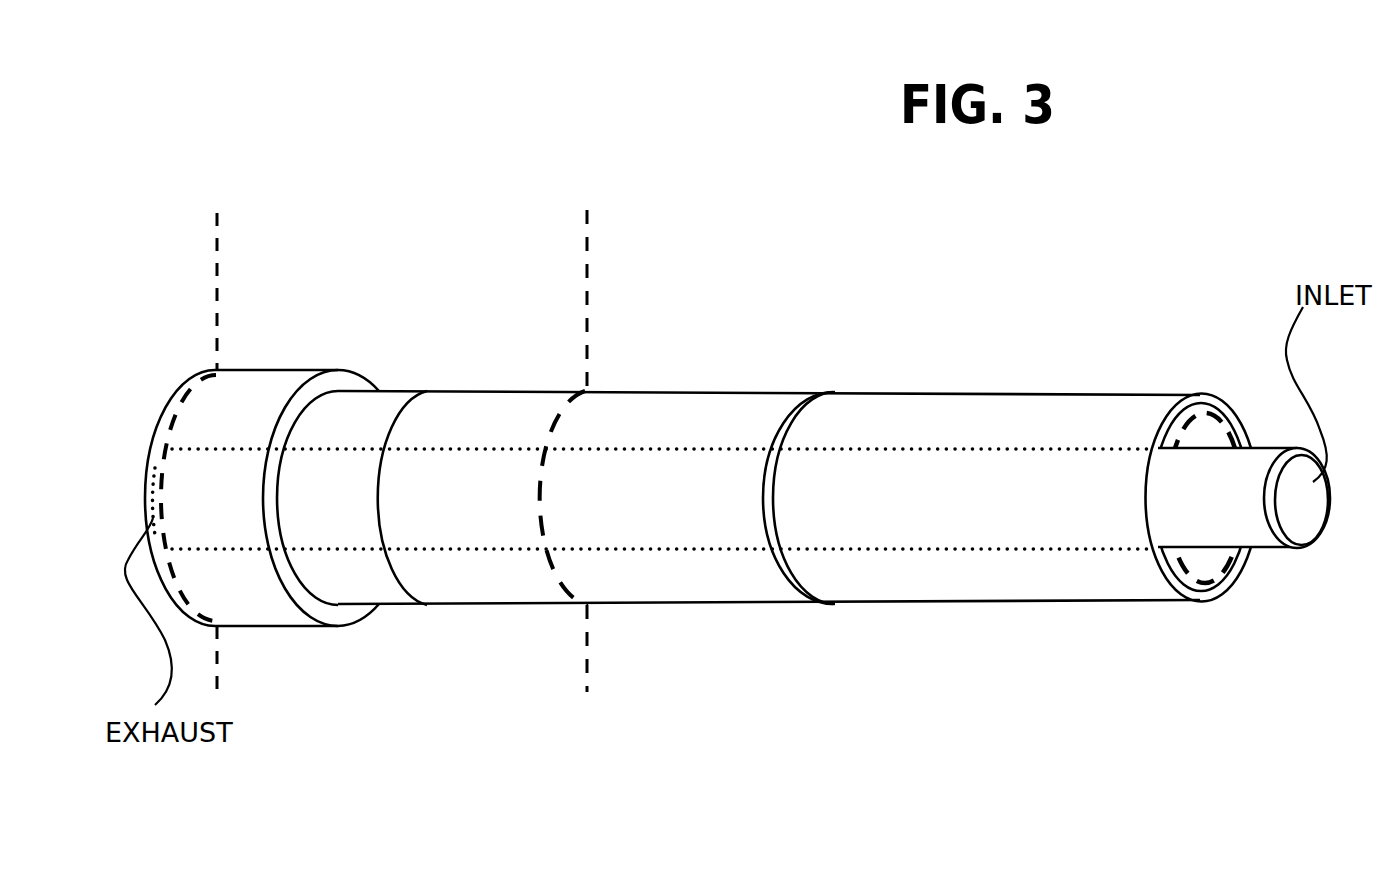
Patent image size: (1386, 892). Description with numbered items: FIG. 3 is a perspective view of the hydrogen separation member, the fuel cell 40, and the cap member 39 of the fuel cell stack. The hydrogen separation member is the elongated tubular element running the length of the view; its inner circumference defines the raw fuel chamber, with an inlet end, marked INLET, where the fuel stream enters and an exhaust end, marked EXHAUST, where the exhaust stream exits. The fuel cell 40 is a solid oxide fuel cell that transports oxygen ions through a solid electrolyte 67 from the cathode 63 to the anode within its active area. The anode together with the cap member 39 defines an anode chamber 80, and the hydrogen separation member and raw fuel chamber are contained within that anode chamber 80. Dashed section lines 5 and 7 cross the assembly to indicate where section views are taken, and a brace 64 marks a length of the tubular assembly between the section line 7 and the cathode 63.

The section line for FIG. 5 is at (224, 434).
The section line for FIG. 7 is at (569, 422).
The cap member 39 is at (287, 387).
The fuel cell 40 is at (1217, 406).
The cathode 63 is at (838, 393).
The catalyst section 64 is at (792, 678).
The solid electrolyte 67 is at (385, 407).
The anode chamber 80 is at (1188, 430).